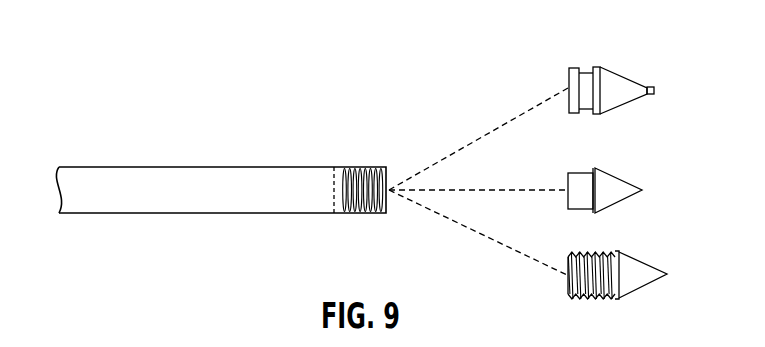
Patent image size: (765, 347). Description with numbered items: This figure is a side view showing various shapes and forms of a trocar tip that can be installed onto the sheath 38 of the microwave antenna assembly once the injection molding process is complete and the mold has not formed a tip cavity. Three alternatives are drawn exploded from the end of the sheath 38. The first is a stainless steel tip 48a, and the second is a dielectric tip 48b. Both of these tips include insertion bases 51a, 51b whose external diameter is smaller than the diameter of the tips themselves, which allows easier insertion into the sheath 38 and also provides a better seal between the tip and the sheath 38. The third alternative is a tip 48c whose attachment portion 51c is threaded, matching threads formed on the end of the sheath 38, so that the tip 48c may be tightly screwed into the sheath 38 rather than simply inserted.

The sheath 38 is at (244, 167).
The insertion base 51a is at (572, 68).
The stainless steel tip 48a is at (598, 67).
The insertion base 51b is at (570, 173).
The dielectric tip 48b is at (595, 169).
The threaded portion 51c is at (568, 255).
The threaded tip 48c is at (620, 252).